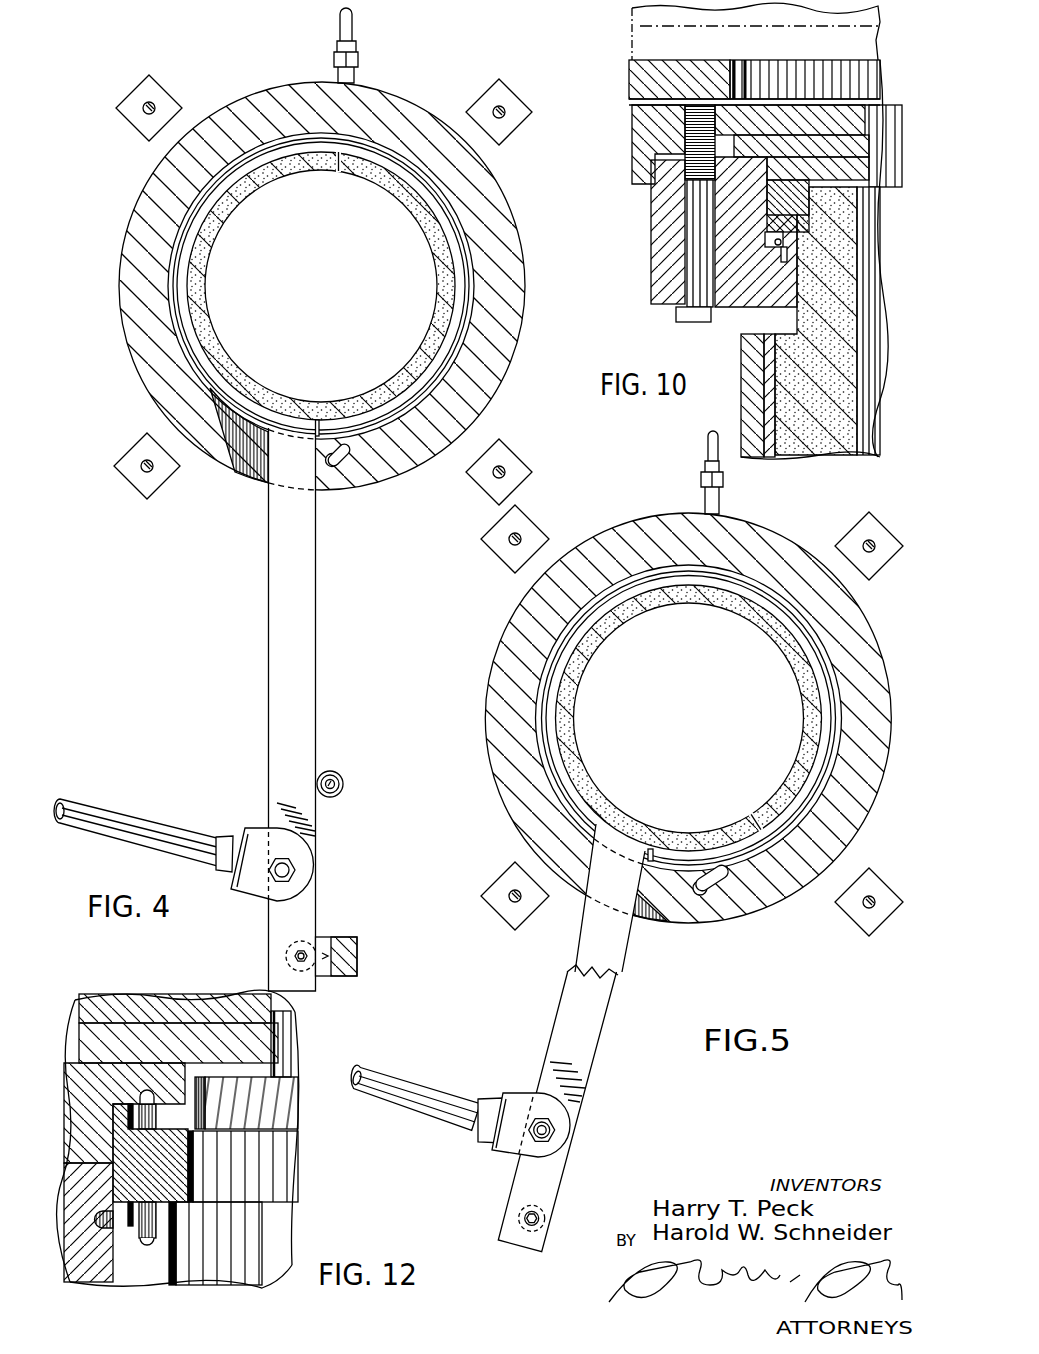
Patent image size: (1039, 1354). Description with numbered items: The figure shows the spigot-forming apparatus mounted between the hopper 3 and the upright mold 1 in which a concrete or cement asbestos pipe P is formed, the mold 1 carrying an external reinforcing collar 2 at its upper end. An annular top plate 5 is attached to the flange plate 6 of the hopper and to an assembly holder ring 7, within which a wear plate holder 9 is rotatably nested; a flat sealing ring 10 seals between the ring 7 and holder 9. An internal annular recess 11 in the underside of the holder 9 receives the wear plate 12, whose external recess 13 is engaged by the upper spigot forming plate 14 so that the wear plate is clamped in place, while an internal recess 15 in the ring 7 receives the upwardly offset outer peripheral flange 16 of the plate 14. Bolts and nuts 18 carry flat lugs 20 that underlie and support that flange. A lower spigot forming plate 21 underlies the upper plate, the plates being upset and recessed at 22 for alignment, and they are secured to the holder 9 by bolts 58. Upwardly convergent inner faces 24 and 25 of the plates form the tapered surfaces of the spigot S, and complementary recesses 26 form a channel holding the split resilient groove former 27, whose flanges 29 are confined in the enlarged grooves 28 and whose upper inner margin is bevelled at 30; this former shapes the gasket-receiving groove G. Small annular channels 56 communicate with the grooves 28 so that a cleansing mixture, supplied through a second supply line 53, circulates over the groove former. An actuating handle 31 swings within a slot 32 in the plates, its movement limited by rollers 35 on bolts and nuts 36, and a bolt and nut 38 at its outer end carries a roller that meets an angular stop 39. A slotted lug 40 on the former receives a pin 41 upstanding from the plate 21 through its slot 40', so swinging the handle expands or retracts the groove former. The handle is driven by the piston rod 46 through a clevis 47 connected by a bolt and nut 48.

In FIG. 10, the upright mold 1 is at (765, 455).
In FIG. 10, the external reinforcing collar 2 is at (741, 372).
In FIG. 10, the hopper 3 is at (632, 14).
In FIG. 10, the top plate 5 is at (629, 66).
In FIG. 10, the flange plate 6 is at (848, 46).
In FIG. 10, the assembly holder ring 7 is at (632, 110).
In FIG. 10, the wear plate holder 9 is at (655, 132).
In FIG. 12, the wear plate holder 9 is at (109, 1002).
In FIG. 10, the sealing ring 10 is at (700, 105).
In FIG. 10, the internal annular recess 11 is at (822, 115).
In FIG. 12, the internal annular recess 11 is at (177, 1012).
In FIG. 10, the wear plate 12 is at (865, 138).
In FIG. 12, the wear plate 12 is at (292, 1050).
In FIG. 10, the external recess 13 is at (760, 115).
In FIG. 12, the external recess 13 is at (80, 1006).
In FIG. 10, the upper spigot forming plate 14 is at (651, 195).
In FIG. 12, the upper spigot forming plate 14 is at (66, 1108).
In FIG. 10, the internal recess 15 is at (651, 158).
In FIG. 10, the outer peripheral flange 16 is at (632, 176).
In FIG. 4, the bolts and nuts 18 is at (505, 110).
In FIG. 5, the bolts and nuts 18 is at (510, 890).
In FIG. 4, the flat lug 20 is at (173, 100).
In FIG. 5, the flat lug 20 is at (870, 936).
In FIG. 4, the lower spigot forming plate 21 is at (128, 228).
In FIG. 5, the lower spigot forming plate 21 is at (494, 658).
In FIG. 10, the lower spigot forming plate 21 is at (651, 255).
In FIG. 12, the lower spigot forming plate 21 is at (86, 1280).
In FIG. 10, the upset and recessed margins 22 is at (651, 218).
In FIG. 10, the inner face of upper forming plate 24 is at (880, 110).
In FIG. 12, the inner face of upper forming plate 24 is at (292, 1110).
In FIG. 10, the inner face of lower forming plate 25 is at (850, 290).
In FIG. 12, the inner face of lower forming plate 25 is at (290, 1226).
In FIG. 10, the internal recesses 26 is at (858, 268).
In FIG. 12, the internal recesses 26 is at (186, 1217).
In FIG. 4, the groove former 27 is at (462, 313).
In FIG. 5, the groove former 27 is at (829, 705).
In FIG. 10, the groove former 27 is at (875, 235).
In FIG. 12, the groove former 27 is at (295, 1181).
In FIG. 4, the annular grooves 28 is at (186, 336).
In FIG. 10, the annular grooves 28 is at (870, 172).
In FIG. 12, the annular grooves 28 is at (122, 1229).
In FIG. 4, the annular flanges 29 is at (196, 328).
In FIG. 5, the annular flanges 29 is at (558, 738).
In FIG. 10, the annular flanges 29 is at (776, 262).
In FIG. 4, the bevel 30 is at (338, 173).
In FIG. 5, the bevel 30 is at (762, 825).
In FIG. 10, the bevel 30 is at (880, 195).
In FIG. 12, the bevel 30 is at (284, 1138).
In FIG. 4, the actuating handle 31 is at (269, 604).
In FIG. 5, the actuating handle 31 is at (596, 1065).
In FIG. 4, the slot 32 is at (228, 472).
In FIG. 5, the slot 32 is at (647, 928).
In FIG. 4, the rollers 35 is at (339, 794).
In FIG. 4, the bolts and nuts 36 is at (338, 774).
In FIG. 4, the bolt and nut 38 is at (288, 956).
In FIG. 5, the bolt and nut 38 is at (545, 1220).
In FIG. 4, the angular stop 39 is at (358, 956).
In FIG. 4, the slotted lug 40 is at (315, 467).
In FIG. 5, the slotted lug 40 is at (689, 880).
In FIG. 4, the slot of lug 40' is at (383, 483).
In FIG. 5, the slot of lug 40' is at (756, 908).
In FIG. 4, the pin 41 is at (325, 461).
In FIG. 5, the pin 41 is at (700, 896).
In FIG. 4, the piston rod 46 is at (136, 821).
In FIG. 5, the piston rod 46 is at (402, 1105).
In FIG. 4, the clevis 47 is at (236, 886).
In FIG. 5, the clevis 47 is at (523, 1097).
In FIG. 4, the bolt and nut 48 is at (296, 872).
In FIG. 5, the bolt and nut 48 is at (549, 1135).
In FIG. 4, the second supply line 53 is at (354, 26).
In FIG. 5, the second supply line 53 is at (707, 447).
In FIG. 10, the annular channels 56 is at (775, 185).
In FIG. 12, the annular channels 56 is at (203, 1104).
In FIG. 10, the bolts 58 is at (676, 317).
In FIG. 4, the spigot S is at (220, 237).
In FIG. 5, the spigot S is at (705, 600).
In FIG. 10, the spigot S is at (860, 320).
In FIG. 10, the gasket-receiving groove G is at (870, 250).
In FIG. 10, the pipe P is at (889, 421).